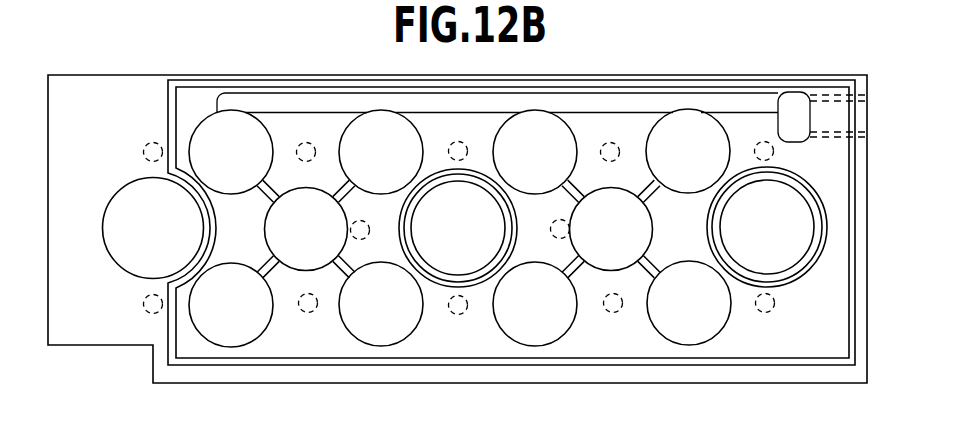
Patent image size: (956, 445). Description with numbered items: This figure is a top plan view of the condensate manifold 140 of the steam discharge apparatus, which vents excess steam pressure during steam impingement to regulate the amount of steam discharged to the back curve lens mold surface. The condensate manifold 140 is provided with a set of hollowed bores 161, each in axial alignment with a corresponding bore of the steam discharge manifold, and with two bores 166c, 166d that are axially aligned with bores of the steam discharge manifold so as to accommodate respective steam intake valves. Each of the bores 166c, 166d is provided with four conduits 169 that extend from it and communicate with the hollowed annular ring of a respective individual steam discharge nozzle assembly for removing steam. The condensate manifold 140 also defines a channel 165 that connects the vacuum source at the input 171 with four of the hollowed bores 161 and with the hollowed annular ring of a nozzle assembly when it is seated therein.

The condensate manifold 140 is at (747, 75).
The hollowed bores 161 is at (343, 128).
The channel 165 is at (481, 102).
The bore 166c is at (301, 271).
The bore 166d is at (601, 270).
The conduits 169 is at (263, 196).
The input 171 is at (858, 110).